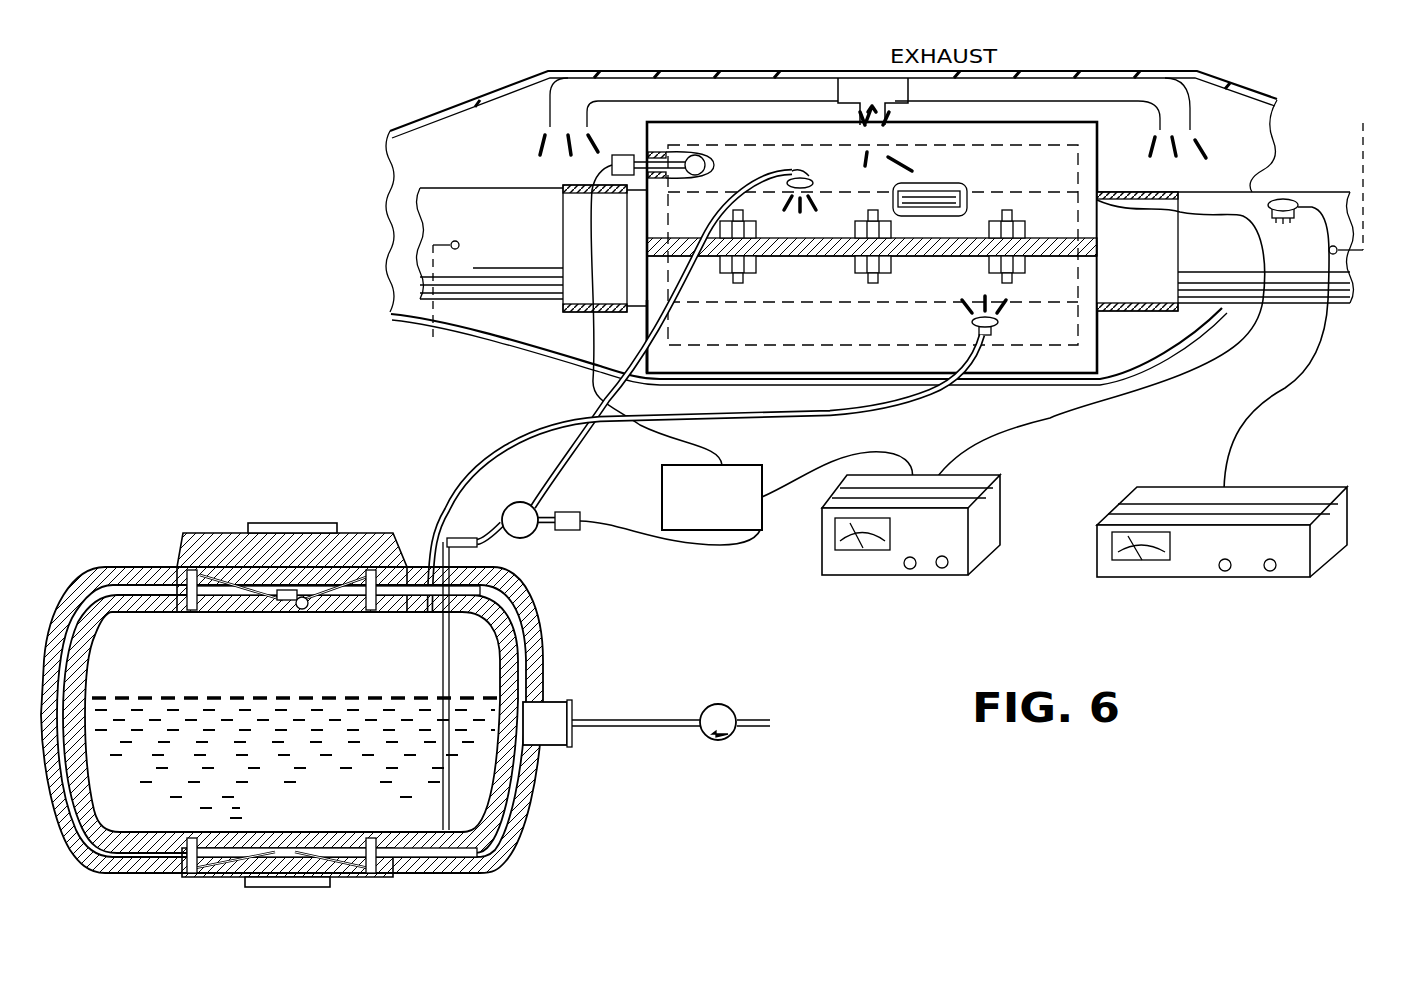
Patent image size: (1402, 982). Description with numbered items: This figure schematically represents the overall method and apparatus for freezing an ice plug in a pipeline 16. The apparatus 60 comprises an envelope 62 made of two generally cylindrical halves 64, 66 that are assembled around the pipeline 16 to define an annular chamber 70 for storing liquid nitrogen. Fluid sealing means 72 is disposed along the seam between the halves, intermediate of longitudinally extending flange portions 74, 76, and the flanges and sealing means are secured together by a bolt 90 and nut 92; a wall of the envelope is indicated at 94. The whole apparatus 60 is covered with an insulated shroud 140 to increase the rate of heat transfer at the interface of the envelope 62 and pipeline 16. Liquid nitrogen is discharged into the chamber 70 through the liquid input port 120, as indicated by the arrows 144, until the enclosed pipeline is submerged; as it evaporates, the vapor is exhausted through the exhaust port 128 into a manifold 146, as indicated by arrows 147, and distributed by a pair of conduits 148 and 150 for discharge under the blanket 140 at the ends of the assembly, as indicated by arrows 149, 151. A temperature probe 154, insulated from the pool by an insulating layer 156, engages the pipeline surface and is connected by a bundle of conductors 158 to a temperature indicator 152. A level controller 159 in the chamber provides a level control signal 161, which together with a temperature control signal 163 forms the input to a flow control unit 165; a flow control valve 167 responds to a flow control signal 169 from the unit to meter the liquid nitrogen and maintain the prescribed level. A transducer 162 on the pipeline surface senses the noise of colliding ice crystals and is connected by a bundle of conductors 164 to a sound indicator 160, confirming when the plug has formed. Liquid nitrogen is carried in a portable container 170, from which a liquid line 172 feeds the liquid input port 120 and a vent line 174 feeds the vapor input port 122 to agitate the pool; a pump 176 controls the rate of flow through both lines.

The pipeline 16 is at (438, 188).
The apparatus 60 is at (812, 59).
The envelope 62 is at (738, 350).
The cylindrical half 64 is at (1010, 147).
The cylindrical half 66 is at (800, 345).
The annular chamber 70 is at (773, 147).
The fluid sealing means 72 is at (1060, 257).
The longitudinally extending flange portion 74 is at (927, 238).
The longitudinally extending flange portion 76 is at (933, 257).
The bolt 90 is at (871, 275).
The nut 92 is at (857, 260).
The enclosure end wall 94 is at (688, 360).
The liquid input port 120 is at (809, 178).
The vapor input port 122 is at (997, 323).
The exhaust port 128 is at (887, 123).
The insulated shroud 140 is at (452, 106).
The arrows 144 is at (807, 202).
The manifold 146 is at (860, 77).
The arrows 147 is at (863, 126).
The conduit 148 is at (680, 72).
The arrows 149 is at (557, 147).
The conduit 150 is at (1113, 87).
The arrows 151 is at (1190, 150).
The temperature indicator 152 is at (1000, 497).
The temperature probe 154 is at (930, 193).
The insulating layer 156 is at (965, 193).
The bundle of conductors 158 is at (1262, 318).
The level controller 159 is at (706, 165).
The sound indicator 160 is at (1166, 487).
The level control signal 161 is at (640, 430).
The transducer 162 is at (1285, 198).
The temperature control signal 163 is at (820, 476).
The bundle of conductors 164 is at (963, 308).
The flow control unit 165 is at (723, 508).
The flow control valve 167 is at (568, 532).
The flow control signal 169 is at (630, 537).
The portable container 170 is at (217, 498).
The liquid line 172 is at (567, 477).
The vent line 174 is at (445, 490).
The pump 176 is at (738, 706).